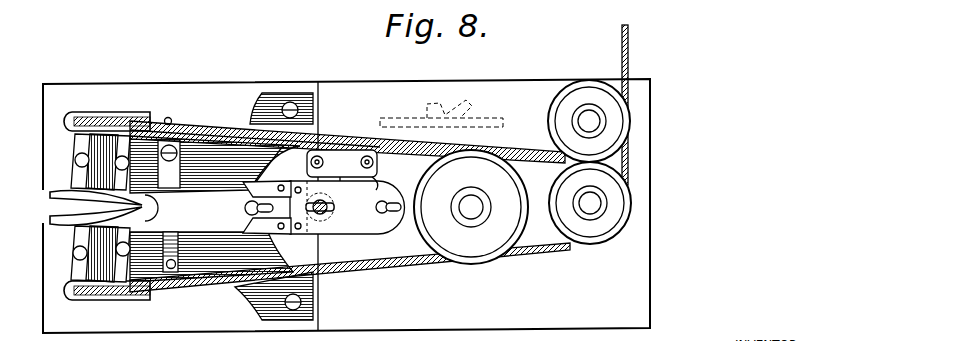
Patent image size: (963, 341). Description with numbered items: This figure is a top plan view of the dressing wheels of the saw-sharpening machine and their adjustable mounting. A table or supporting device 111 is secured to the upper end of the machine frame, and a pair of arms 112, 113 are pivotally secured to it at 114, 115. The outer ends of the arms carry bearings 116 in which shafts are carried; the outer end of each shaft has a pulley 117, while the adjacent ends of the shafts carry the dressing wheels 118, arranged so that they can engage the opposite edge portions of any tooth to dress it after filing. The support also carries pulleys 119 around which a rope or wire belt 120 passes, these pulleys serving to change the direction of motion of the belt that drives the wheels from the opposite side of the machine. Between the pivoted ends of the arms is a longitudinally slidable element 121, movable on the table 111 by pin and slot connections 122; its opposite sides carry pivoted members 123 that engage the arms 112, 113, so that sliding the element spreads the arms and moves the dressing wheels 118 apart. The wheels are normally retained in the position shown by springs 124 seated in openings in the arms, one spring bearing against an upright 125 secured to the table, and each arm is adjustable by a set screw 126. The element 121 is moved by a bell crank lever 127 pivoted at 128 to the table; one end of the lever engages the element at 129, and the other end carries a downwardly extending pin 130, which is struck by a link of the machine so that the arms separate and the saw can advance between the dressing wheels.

The table or supporting device 111 is at (468, 318).
The arm 112 is at (258, 115).
The arm 113 is at (253, 297).
The pivot 114 is at (290, 102).
The pivot 115 is at (320, 316).
The bearings 116 is at (82, 174).
The pulley 117 is at (105, 113).
The dressing wheels 118 is at (70, 222).
The pulleys 119 is at (574, 94).
The rope or wire belt 120 is at (534, 156).
The longitudinally slidable element 121 is at (346, 224).
The pin and slot connections 122 is at (245, 208).
The pivoted members 123 is at (270, 184).
The springs 124 is at (173, 235).
The upright 125 is at (178, 266).
The set screw 126 is at (169, 118).
The bell crank lever 127 is at (342, 158).
The pivot 128 is at (318, 156).
The engagement point 129 is at (326, 205).
The downwardly extending pin 130 is at (380, 128).